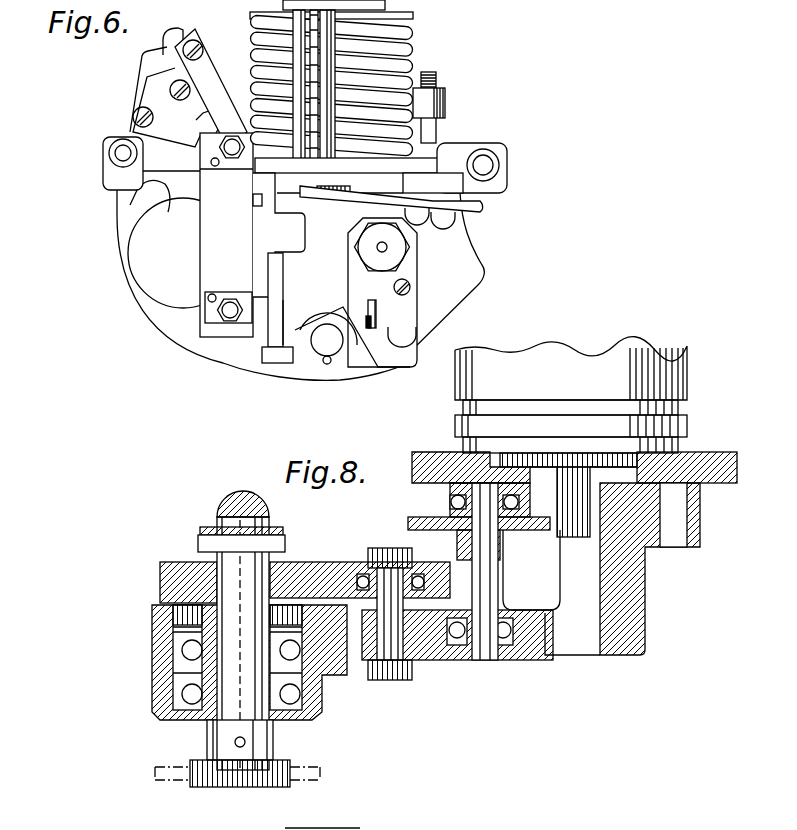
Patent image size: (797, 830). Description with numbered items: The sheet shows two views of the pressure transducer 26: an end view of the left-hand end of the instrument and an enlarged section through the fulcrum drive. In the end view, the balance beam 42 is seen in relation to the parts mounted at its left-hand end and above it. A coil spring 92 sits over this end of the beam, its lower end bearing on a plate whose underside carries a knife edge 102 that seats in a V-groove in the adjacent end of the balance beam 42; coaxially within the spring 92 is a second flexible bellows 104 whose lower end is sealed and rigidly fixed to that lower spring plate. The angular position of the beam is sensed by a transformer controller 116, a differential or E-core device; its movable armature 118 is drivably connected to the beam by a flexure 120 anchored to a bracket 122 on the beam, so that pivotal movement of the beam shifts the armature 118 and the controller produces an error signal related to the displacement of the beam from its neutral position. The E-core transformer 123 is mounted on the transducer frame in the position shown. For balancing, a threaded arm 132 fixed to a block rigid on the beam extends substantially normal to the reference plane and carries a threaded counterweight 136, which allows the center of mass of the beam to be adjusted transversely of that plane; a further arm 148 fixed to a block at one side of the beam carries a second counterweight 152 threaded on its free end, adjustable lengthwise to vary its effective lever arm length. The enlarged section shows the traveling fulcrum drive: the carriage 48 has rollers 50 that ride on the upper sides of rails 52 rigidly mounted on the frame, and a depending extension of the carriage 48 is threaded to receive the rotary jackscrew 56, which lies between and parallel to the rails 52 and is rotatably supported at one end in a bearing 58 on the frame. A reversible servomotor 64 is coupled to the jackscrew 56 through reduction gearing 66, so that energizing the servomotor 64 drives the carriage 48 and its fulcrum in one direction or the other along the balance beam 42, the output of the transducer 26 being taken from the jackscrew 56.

In FIG. 8, the transducer 26 is at (702, 450).
In FIG. 6, the balance beam 42 is at (338, 278).
In FIG. 6, the carriage 48 is at (378, 366).
In FIG. 6, the rollers 50 is at (373, 313).
In FIG. 6, the rails 52 is at (392, 334).
In FIG. 6, the jackscrew 56 is at (333, 347).
In FIG. 8, the jackscrew 56 is at (217, 506).
In FIG. 6, the bearing 58 is at (327, 365).
In FIG. 8, the bearing 58 is at (177, 650).
In FIG. 6, the servomotor 64 is at (143, 271).
In FIG. 8, the servomotor 64 is at (600, 352).
In FIG. 8, the reduction gearing 66 is at (446, 560).
In FIG. 6, the coil spring 92 is at (409, 42).
In FIG. 6, the knife edge 102 is at (343, 253).
In FIG. 6, the second flexible bellows 104 is at (397, 51).
In FIG. 6, the transformer controller 116 is at (226, 258).
In FIG. 6, the movable armature 118 is at (257, 205).
In FIG. 6, the flexure 120 is at (268, 348).
In FIG. 6, the bracket 122 is at (290, 373).
In FIG. 6, the E-core transformer 123 is at (231, 42).
In FIG. 6, the threaded arm 132 is at (435, 137).
In FIG. 6, the counterweight 136 is at (445, 105).
In FIG. 6, the arm 148 is at (387, 247).
In FIG. 6, the second counterweight 152 is at (403, 257).